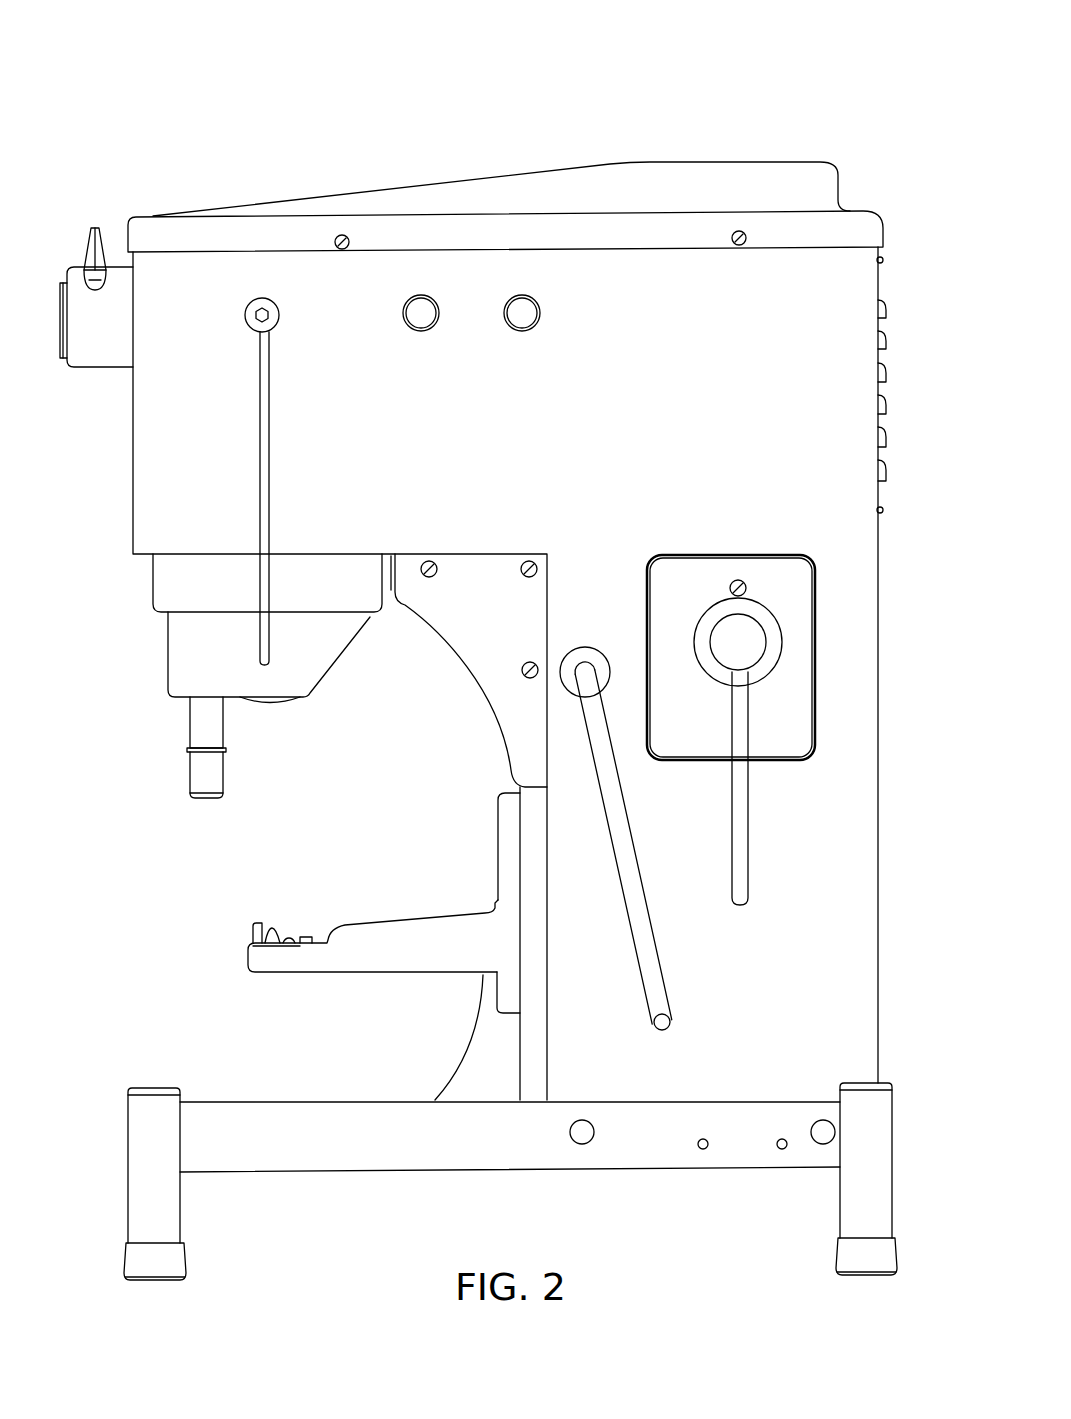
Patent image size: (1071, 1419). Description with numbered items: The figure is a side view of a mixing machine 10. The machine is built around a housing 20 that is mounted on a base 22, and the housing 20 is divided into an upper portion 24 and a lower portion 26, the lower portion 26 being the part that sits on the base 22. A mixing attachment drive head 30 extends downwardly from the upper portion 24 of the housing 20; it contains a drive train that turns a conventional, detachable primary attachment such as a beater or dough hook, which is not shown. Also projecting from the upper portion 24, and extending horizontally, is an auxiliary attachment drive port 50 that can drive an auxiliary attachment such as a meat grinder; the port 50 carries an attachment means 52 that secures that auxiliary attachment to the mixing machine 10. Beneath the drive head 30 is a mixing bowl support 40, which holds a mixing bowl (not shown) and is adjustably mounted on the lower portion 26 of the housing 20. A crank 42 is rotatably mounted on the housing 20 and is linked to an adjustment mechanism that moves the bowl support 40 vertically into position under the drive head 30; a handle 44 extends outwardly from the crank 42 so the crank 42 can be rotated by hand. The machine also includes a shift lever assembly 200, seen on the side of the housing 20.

The mixing machine 10 is at (606, 132).
The housing 20 is at (890, 632).
The base 22 is at (848, 1195).
The upper portion 24 is at (805, 285).
The lower portion 26 is at (813, 972).
The mixing attachment drive head 30 is at (190, 667).
The mixing bowl support 40 is at (355, 950).
The crank 42 is at (642, 903).
The handle 44 is at (665, 1020).
The auxiliary attachment drive port 50 is at (60, 290).
The attachment means 52 is at (100, 230).
The shift lever assembly 200 is at (772, 708).